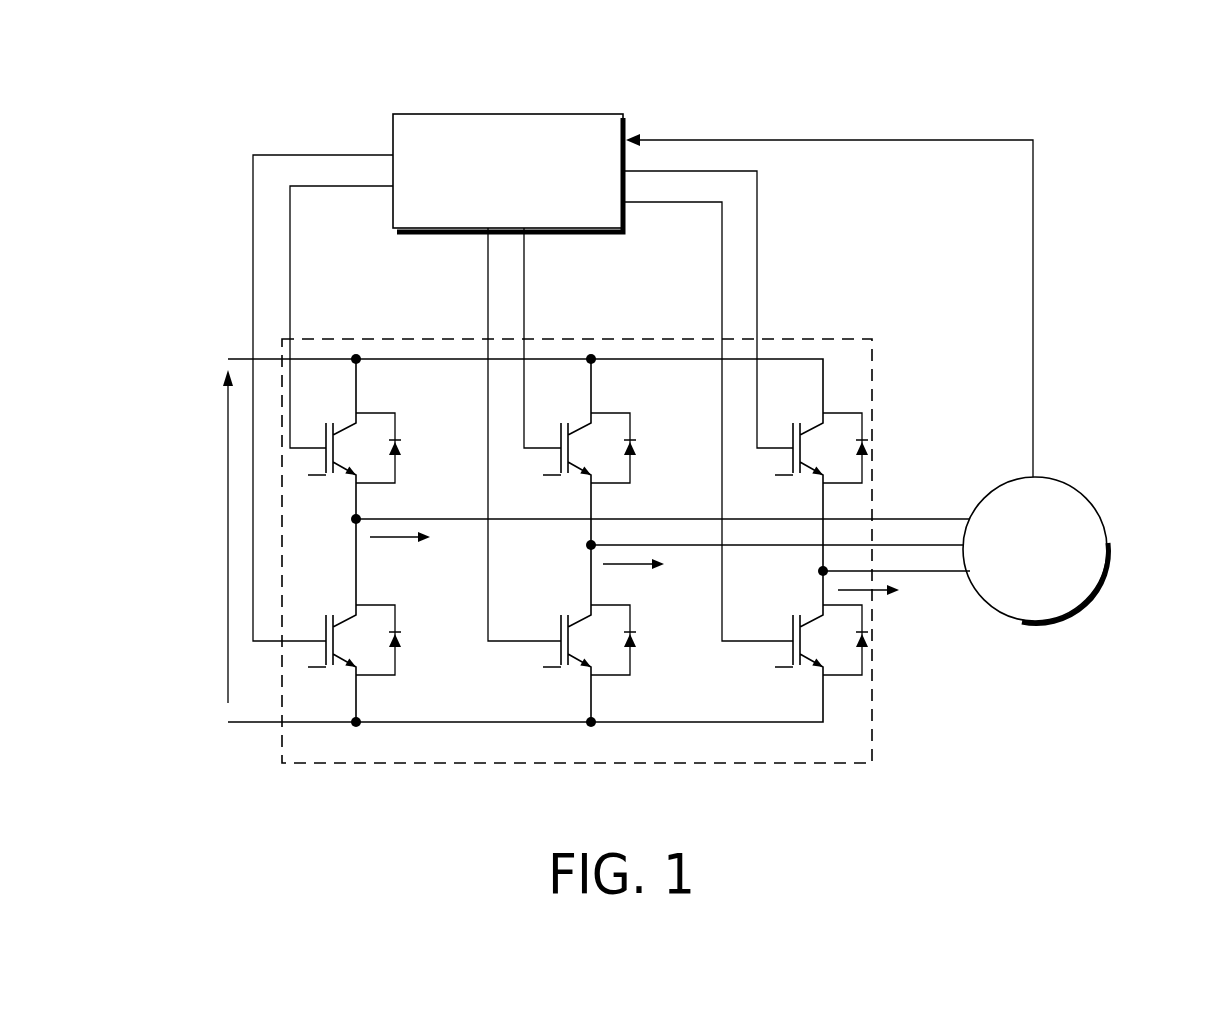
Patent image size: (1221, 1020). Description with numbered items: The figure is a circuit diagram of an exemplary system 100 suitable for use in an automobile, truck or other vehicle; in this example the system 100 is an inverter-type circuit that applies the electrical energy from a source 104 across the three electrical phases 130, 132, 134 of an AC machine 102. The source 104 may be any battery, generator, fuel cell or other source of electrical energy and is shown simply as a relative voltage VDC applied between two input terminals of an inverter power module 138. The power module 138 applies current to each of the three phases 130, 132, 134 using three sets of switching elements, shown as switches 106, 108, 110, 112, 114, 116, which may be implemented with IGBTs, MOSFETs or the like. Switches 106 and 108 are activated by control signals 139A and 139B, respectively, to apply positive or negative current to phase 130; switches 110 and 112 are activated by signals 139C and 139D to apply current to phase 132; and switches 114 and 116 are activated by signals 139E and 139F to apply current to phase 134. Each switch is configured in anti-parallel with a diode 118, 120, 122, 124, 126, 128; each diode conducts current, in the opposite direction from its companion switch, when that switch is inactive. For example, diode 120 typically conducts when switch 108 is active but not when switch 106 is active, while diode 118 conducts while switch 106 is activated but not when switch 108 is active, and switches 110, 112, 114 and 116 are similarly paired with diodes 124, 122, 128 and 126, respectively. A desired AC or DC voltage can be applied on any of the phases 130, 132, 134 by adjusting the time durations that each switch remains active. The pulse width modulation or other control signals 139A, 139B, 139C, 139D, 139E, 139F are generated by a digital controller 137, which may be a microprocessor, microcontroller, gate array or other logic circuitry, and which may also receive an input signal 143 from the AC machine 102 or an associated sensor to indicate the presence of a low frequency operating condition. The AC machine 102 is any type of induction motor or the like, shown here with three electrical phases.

The system 100 is at (1064, 86).
The AC machine 102 is at (1108, 540).
The source 104 is at (228, 633).
The switch 106 is at (334, 478).
The switch 108 is at (334, 670).
The switch 110 is at (569, 478).
The switch 112 is at (569, 670).
The switch 114 is at (801, 478).
The switch 116 is at (801, 670).
The diode 118 is at (397, 448).
The diode 120 is at (397, 640).
The diode 122 is at (632, 448).
The diode 124 is at (632, 640).
The diode 126 is at (864, 448).
The diode 128 is at (866, 640).
The electrical phase 130 is at (926, 518).
The electrical phase 132 is at (938, 545).
The electrical phase 134 is at (938, 573).
The controller 137 is at (413, 113).
The power module 138 is at (872, 700).
The control signal 139A is at (305, 154).
The control signal 139B is at (290, 290).
The control signal 139C is at (488, 312).
The control signal 139D is at (524, 297).
The control signal 139E is at (722, 338).
The control signal 139F is at (758, 315).
The input signal 143 is at (922, 140).